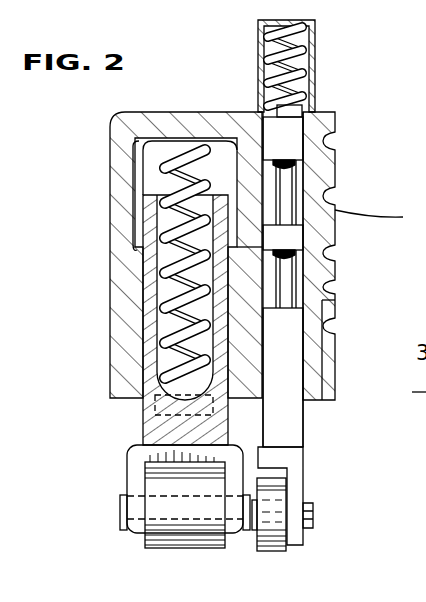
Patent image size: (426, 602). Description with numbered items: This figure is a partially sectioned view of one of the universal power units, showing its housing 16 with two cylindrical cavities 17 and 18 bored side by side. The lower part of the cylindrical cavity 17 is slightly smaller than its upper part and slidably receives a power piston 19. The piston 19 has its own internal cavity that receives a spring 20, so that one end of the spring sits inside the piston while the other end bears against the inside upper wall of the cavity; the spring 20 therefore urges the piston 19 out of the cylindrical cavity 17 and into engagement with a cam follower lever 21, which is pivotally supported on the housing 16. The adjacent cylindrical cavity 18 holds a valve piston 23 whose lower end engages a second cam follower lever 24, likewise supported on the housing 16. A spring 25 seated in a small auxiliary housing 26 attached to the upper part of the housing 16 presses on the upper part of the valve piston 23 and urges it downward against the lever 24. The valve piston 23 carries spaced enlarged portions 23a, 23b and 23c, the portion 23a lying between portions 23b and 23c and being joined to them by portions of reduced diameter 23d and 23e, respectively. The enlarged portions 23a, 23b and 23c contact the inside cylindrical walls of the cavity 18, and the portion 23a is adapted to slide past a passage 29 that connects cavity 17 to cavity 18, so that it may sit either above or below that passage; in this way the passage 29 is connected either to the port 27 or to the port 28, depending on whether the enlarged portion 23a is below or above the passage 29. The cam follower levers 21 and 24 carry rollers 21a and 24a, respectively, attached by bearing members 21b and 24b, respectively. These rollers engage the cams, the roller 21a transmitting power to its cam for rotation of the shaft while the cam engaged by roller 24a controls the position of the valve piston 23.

The housing 16 is at (118, 256).
The cylindrical cavity 17 is at (146, 150).
The cylindrical cavity 18 is at (302, 178).
The power piston 19 is at (145, 303).
The spring 20 is at (150, 168).
The cam follower lever 21 is at (135, 454).
The roller 21a is at (150, 548).
The bearing member 21b is at (122, 507).
The valve piston 23 is at (282, 337).
The enlarged portion 23a is at (300, 232).
The enlarged portion 23b is at (292, 150).
The enlarged portion 23c is at (295, 375).
The portion of reduced diameter 23d is at (290, 197).
The portion of reduced diameter 23e is at (288, 279).
The cam follower lever 24 is at (295, 460).
The roller 24a is at (277, 551).
The bearing member 24b is at (313, 515).
The spring 25 is at (300, 80).
The auxiliary housing 26 is at (317, 58).
The port 27 is at (380, 222).
The port 28 is at (322, 301).
The passage 29 is at (300, 256).